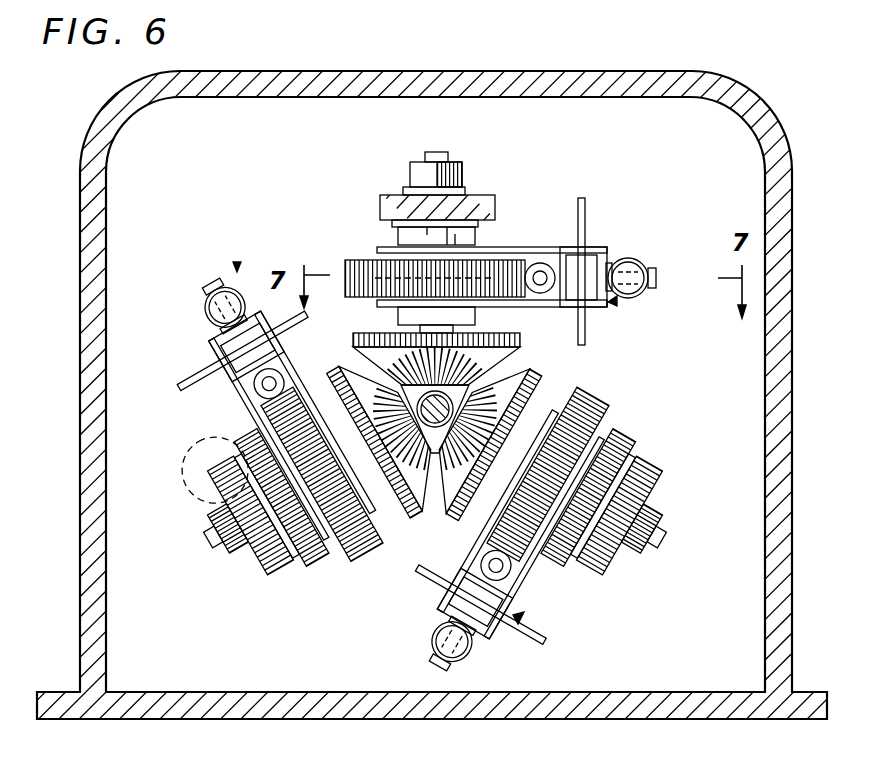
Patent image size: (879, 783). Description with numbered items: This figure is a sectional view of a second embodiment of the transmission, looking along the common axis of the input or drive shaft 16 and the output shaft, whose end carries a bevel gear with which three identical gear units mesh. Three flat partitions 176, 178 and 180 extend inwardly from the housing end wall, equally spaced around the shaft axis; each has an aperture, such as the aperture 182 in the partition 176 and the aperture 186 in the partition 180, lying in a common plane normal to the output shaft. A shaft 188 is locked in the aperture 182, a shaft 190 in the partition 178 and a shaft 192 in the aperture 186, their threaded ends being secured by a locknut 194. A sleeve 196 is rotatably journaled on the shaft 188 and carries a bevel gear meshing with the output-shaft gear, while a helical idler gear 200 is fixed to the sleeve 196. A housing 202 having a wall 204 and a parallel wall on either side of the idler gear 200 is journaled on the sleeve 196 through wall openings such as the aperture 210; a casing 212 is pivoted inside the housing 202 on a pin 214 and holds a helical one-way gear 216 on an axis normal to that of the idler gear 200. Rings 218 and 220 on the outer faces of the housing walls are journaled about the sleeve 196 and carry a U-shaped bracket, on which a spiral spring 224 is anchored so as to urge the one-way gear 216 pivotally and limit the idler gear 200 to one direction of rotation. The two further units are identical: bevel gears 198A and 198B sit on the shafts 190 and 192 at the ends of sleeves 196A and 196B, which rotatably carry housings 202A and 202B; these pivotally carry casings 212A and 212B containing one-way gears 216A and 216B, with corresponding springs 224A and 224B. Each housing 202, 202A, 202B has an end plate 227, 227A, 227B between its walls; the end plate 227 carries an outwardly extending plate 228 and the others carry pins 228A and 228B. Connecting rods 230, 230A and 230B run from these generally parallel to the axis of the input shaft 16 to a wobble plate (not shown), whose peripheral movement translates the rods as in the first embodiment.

The input shaft 16 is at (365, 383).
The partition 176 is at (484, 197).
The partition 178 is at (284, 568).
The partition 180 is at (640, 462).
The aperture 182 is at (412, 176).
The aperture 186 is at (586, 573).
The shaft 188 is at (458, 240).
The shaft 190 is at (308, 533).
The shaft 192 is at (555, 541).
The locknut 194 is at (455, 160).
The sleeve 196 is at (392, 222).
The sleeve 196A is at (228, 460).
The sleeve 196B is at (603, 465).
The bevel gear 198A is at (325, 380).
The bevel gear 198B is at (565, 408).
The idler gear 200 is at (346, 262).
The housing 202 is at (614, 303).
The housing 202A is at (238, 266).
The housing 202B is at (519, 618).
The wall 204 is at (592, 262).
The aperture 210 is at (478, 318).
The casing 212 is at (607, 272).
The casing 212A is at (250, 366).
The casing 212B is at (440, 582).
The pin 214 is at (582, 200).
The one-way gear 216 is at (553, 300).
The one-way gear 216A is at (240, 366).
The one-way gear 216B is at (470, 567).
The ring 218 is at (398, 236).
The ring 220 is at (398, 318).
The spiral spring 224 is at (492, 256).
The worm 224A is at (265, 430).
The worm 224B is at (482, 515).
The end plate 227 is at (603, 303).
The end plate 227A is at (212, 333).
The end plate 227B is at (477, 637).
The plate 228 is at (640, 262).
The pin 228A is at (221, 280).
The pin 228B is at (432, 666).
The connecting rod 230 is at (630, 259).
The connecting rod 230A is at (208, 300).
The connecting rod 230B is at (430, 631).